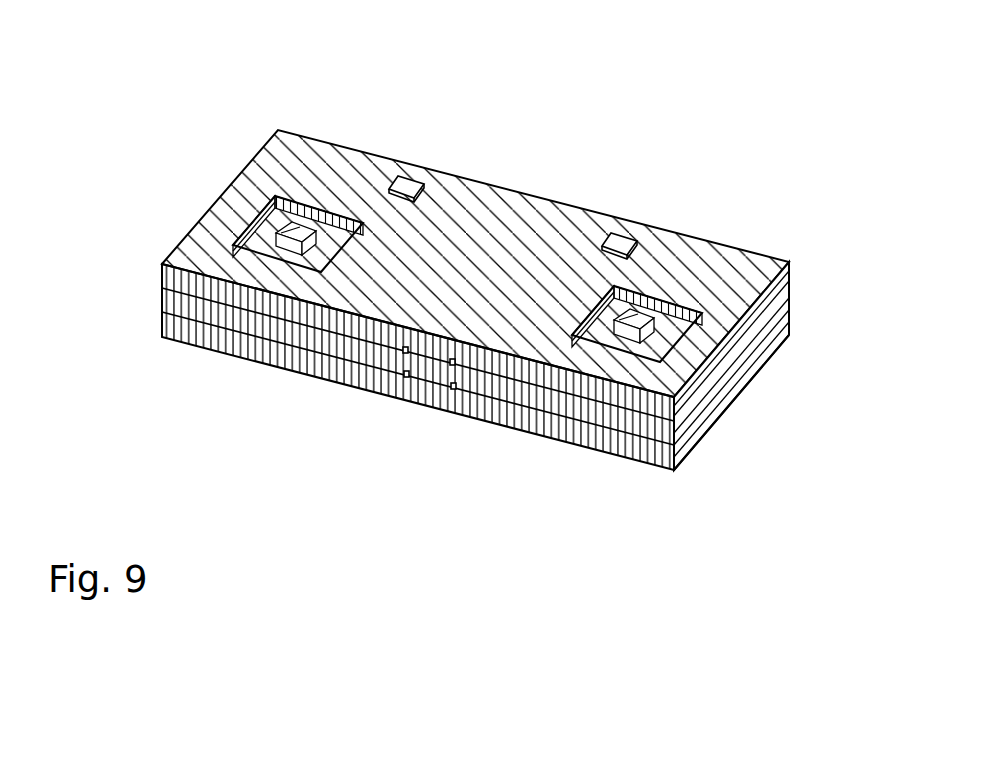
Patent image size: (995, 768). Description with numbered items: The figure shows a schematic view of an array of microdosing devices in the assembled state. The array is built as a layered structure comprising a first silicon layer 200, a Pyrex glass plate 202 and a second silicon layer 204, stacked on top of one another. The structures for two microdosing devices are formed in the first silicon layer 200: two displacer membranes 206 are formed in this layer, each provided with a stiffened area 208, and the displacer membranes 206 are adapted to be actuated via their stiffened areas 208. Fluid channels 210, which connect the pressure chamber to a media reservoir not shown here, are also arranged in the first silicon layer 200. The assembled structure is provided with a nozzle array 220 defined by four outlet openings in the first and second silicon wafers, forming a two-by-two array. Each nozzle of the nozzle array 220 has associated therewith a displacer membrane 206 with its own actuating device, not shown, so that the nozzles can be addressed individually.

The first silicon layer 200 is at (526, 245).
The Pyrex glass plate 202 is at (788, 340).
The second silicon layer 204 is at (782, 310).
The displacer membrane 206 is at (603, 283).
The stiffened area 208 is at (298, 235).
The fluid channel 210 is at (408, 182).
The nozzle array 220 is at (423, 385).